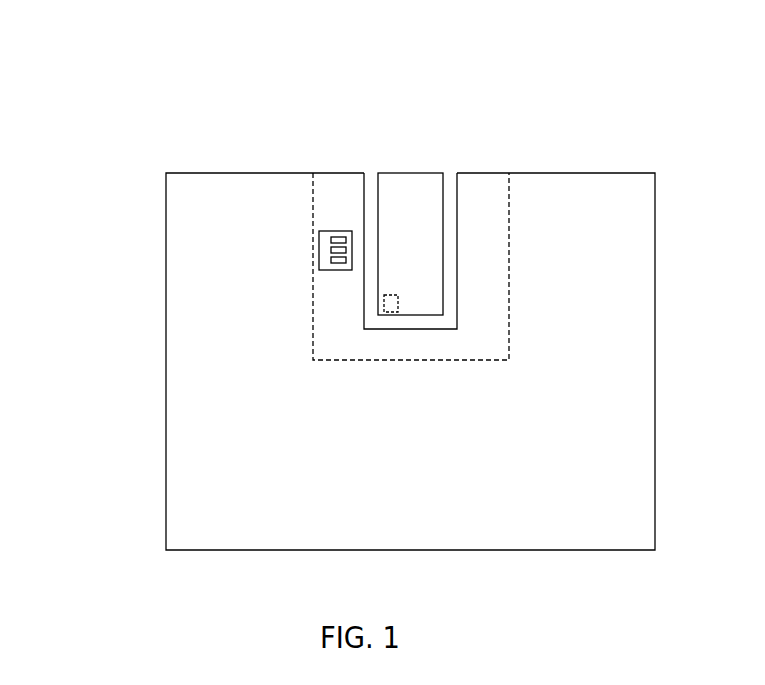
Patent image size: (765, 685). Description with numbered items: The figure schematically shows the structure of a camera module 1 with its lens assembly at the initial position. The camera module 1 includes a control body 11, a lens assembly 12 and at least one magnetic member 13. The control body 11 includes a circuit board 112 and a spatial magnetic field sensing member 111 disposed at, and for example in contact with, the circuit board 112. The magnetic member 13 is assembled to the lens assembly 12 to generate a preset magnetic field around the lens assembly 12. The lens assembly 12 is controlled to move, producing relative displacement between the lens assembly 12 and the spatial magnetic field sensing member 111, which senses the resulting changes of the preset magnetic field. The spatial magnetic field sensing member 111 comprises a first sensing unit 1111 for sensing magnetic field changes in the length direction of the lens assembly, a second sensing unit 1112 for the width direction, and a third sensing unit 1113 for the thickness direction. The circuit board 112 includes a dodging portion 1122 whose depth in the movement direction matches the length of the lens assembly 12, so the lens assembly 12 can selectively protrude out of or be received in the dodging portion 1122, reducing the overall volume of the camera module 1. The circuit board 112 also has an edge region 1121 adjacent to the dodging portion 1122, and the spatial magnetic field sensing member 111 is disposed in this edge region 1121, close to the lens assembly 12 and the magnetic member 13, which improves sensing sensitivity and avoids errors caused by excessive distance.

The camera module 1 is at (168, 40).
The control body 11 is at (97, 402).
The spatial magnetic field sensing member 111 is at (335, 270).
The first sensing unit 1111 is at (331, 240).
The second sensing unit 1112 is at (331, 250).
The third sensing unit 1113 is at (331, 260).
The circuit board 112 is at (202, 412).
The edge region 1121 is at (332, 329).
The dodging portion 1122 is at (398, 322).
The lens assembly 12 is at (410, 210).
The magnetic member 13 is at (393, 302).